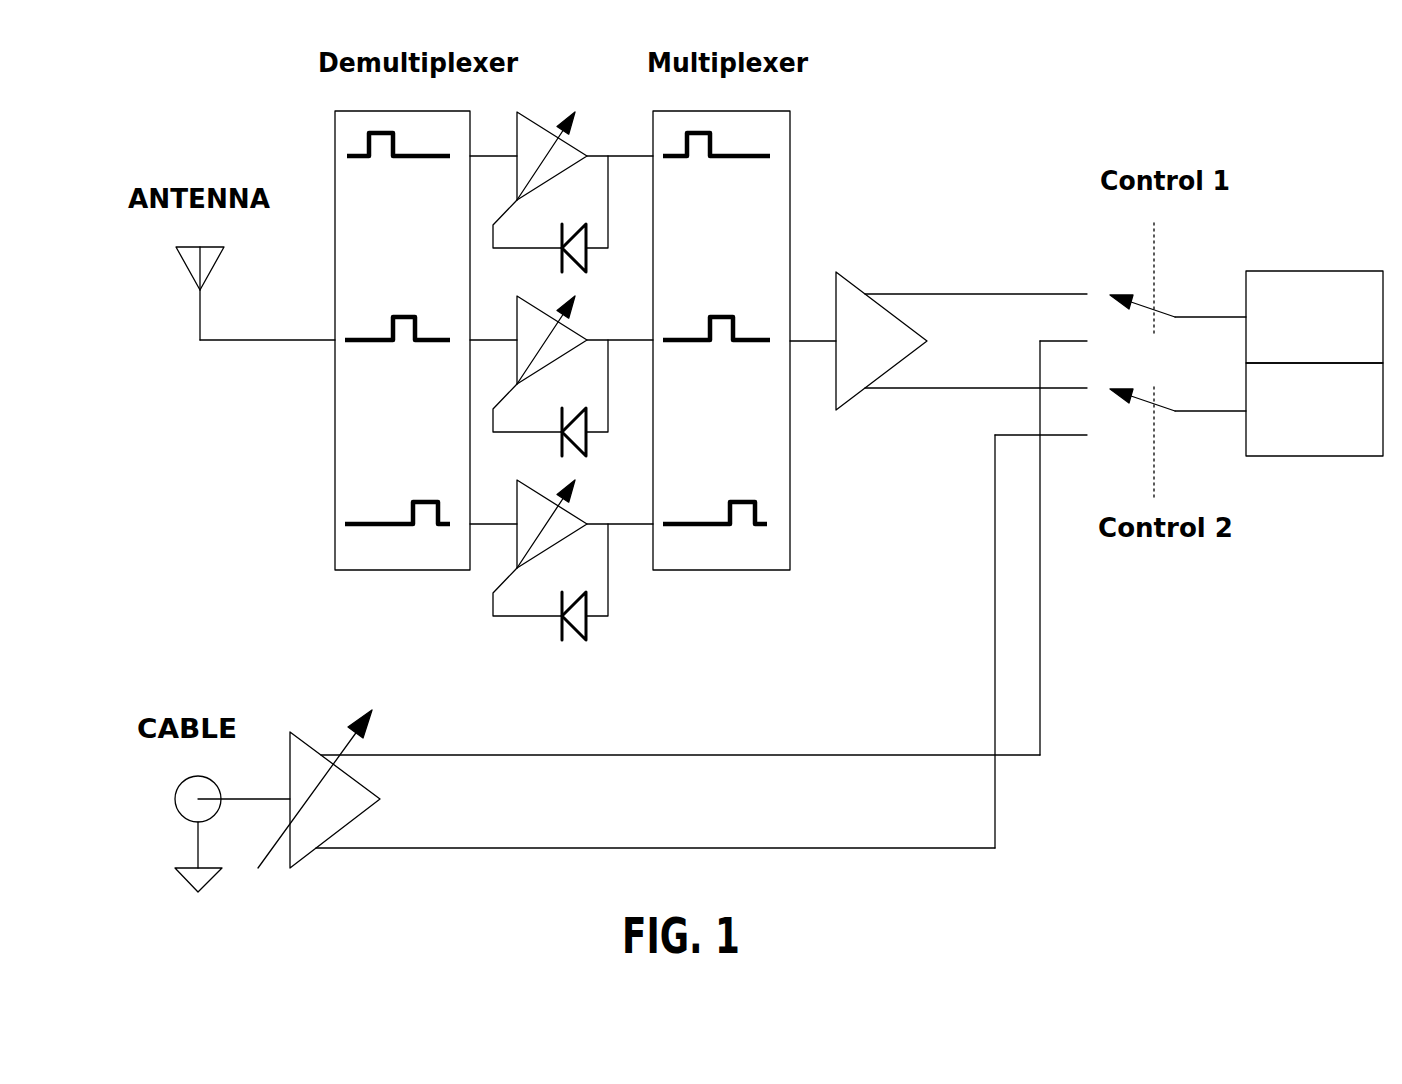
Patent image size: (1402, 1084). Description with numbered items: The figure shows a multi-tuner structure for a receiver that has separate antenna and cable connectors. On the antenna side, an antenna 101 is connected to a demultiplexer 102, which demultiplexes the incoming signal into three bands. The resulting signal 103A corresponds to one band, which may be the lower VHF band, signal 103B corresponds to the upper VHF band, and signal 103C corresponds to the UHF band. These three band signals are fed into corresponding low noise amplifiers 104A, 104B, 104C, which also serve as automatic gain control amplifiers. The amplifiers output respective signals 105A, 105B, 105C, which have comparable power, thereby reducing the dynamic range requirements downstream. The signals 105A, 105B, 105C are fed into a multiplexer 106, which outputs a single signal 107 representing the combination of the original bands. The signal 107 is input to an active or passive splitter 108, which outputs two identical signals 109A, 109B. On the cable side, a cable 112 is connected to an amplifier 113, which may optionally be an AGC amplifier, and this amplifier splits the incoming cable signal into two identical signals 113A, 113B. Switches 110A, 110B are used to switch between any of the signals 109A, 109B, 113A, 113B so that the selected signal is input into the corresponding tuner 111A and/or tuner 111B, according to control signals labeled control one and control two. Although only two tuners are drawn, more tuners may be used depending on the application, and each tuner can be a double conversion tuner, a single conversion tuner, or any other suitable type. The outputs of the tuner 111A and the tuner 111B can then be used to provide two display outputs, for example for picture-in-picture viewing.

The antenna 101 is at (178, 262).
The demultiplexer 102 is at (337, 128).
The signal 103A is at (440, 158).
The signal 103B is at (415, 342).
The signal 103C is at (372, 522).
The low noise amplifier 104A is at (517, 140).
The low noise amplifier 104B is at (517, 318).
The low noise amplifier 104C is at (517, 505).
The signal 105A is at (620, 156).
The signal 105B is at (612, 338).
The signal 105C is at (612, 522).
The multiplexer 106 is at (790, 135).
The signal 107 is at (803, 340).
The splitter 108 is at (860, 292).
The signal 109A is at (1045, 293).
The signal 109B is at (885, 390).
The switch 110A is at (1174, 275).
The switch 110B is at (1122, 425).
The tuner 111A is at (1333, 271).
The tuner 111B is at (1300, 456).
The cable 112 is at (175, 799).
The amplifier 113 is at (300, 732).
The signal 113A is at (737, 755).
The signal 113B is at (733, 848).